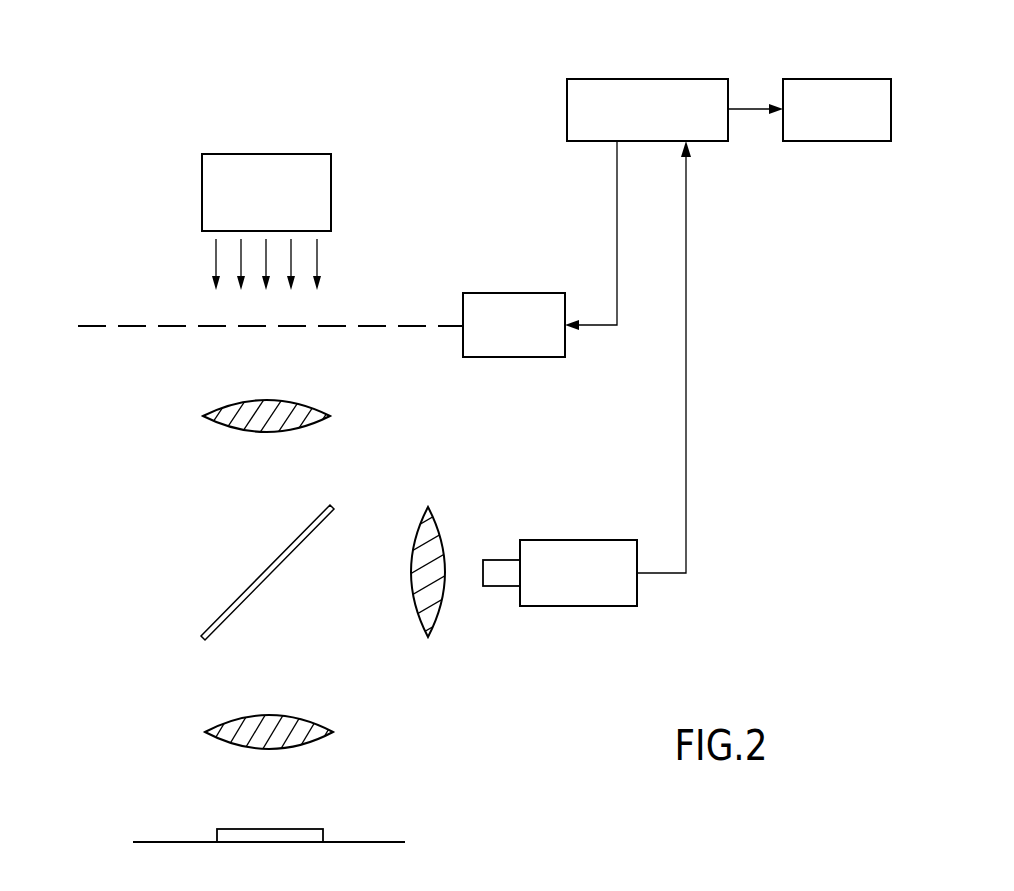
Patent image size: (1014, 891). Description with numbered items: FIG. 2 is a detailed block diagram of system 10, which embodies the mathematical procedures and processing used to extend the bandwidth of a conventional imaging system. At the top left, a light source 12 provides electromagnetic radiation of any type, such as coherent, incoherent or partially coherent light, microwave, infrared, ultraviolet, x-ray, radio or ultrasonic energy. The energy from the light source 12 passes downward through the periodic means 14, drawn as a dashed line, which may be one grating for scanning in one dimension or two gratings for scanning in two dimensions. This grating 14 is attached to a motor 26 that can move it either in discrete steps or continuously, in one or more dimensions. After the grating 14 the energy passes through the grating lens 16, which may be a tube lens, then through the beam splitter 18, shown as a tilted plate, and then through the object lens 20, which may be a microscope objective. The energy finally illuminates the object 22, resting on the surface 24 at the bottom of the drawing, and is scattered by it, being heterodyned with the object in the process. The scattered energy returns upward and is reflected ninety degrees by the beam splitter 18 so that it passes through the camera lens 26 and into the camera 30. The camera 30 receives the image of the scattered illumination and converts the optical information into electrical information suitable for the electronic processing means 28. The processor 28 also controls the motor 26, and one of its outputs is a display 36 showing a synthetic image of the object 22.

The system 10 is at (70, 688).
The light source 12 is at (331, 193).
The periodic means 14 is at (117, 323).
The grating lens 16 is at (220, 405).
The beam splitter 18 is at (218, 618).
The object lens 20 is at (215, 722).
The object 22 is at (222, 828).
The stage 24 is at (378, 841).
The motor 26 is at (512, 292).
The electronic processing means 28 is at (640, 78).
The camera 30 is at (563, 540).
The display 36 is at (843, 78).